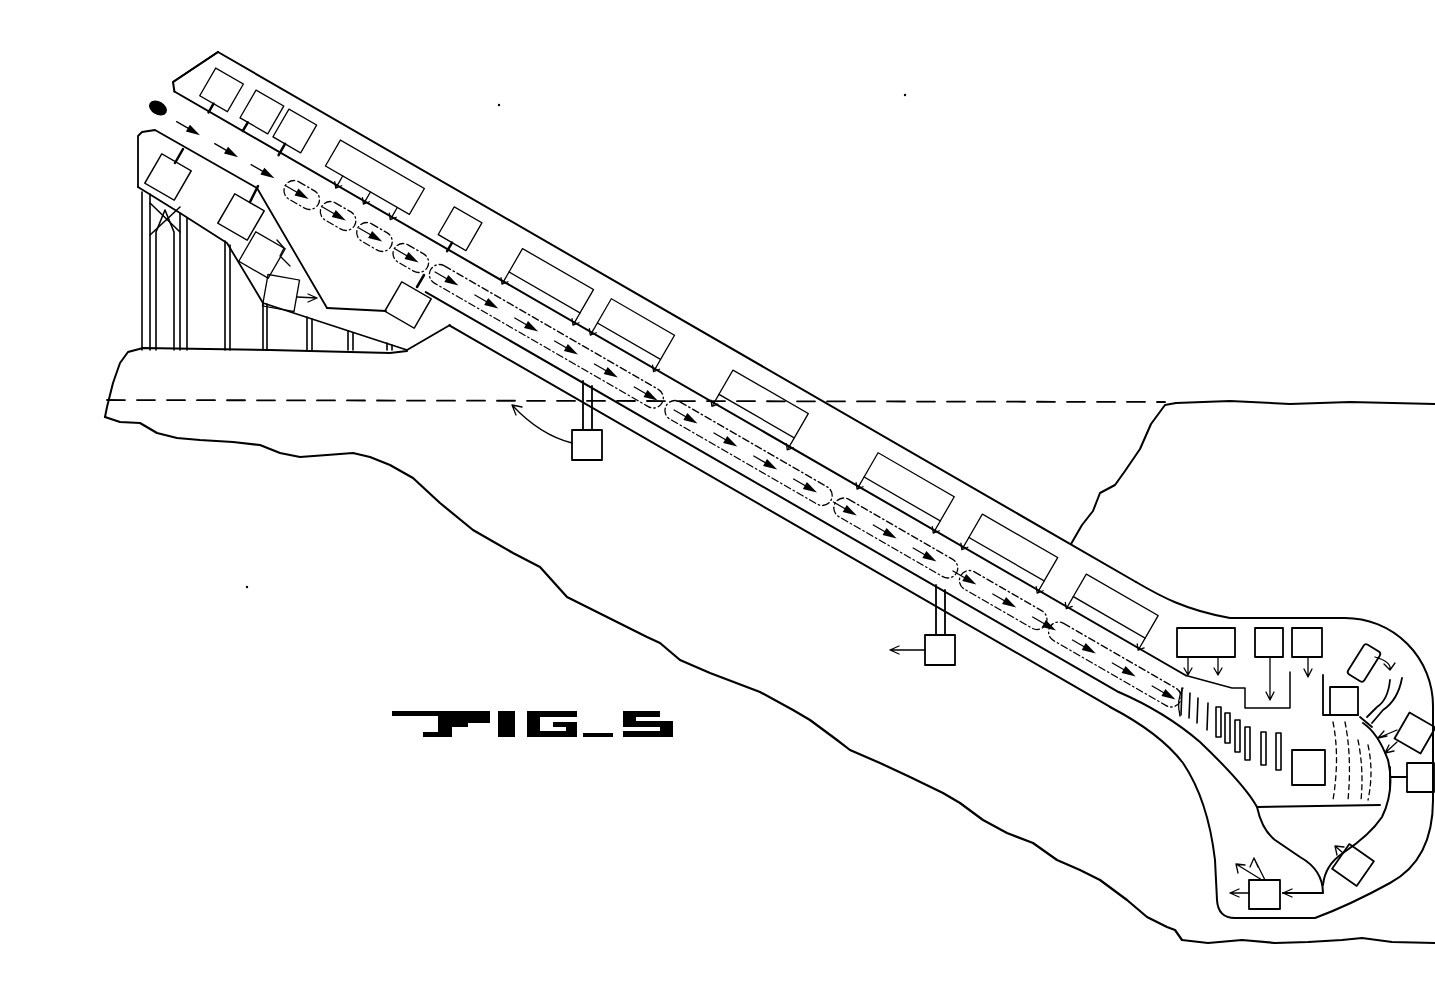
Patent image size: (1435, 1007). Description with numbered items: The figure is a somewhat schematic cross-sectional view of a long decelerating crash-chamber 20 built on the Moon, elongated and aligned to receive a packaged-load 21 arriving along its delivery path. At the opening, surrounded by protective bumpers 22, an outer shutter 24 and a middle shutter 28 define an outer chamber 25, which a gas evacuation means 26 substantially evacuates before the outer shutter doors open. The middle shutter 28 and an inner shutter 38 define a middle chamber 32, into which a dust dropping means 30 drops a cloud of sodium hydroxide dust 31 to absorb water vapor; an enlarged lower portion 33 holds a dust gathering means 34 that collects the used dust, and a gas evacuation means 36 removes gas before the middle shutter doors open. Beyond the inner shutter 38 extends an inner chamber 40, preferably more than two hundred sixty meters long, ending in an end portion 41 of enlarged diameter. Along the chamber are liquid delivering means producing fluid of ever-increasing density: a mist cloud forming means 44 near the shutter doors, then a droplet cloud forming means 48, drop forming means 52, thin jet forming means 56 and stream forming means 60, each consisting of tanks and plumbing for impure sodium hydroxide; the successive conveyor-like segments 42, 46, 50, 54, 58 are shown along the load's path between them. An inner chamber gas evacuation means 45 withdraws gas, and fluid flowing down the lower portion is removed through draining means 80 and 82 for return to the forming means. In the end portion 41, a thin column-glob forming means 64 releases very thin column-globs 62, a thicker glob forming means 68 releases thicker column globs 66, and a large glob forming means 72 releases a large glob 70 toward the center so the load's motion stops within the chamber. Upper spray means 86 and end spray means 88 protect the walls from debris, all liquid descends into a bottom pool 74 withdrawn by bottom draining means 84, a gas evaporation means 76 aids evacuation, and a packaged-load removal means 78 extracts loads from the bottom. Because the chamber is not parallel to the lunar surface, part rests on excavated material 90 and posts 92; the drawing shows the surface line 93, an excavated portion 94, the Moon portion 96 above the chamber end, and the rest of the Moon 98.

The crash-chamber 20 is at (788, 348).
The packaged-load 21 is at (149, 106).
The protective bumpers 22 is at (172, 82).
The outer shutter 24 is at (219, 94).
The outer chamber 25 is at (221, 157).
The gas evacuation means 26 is at (259, 116).
The middle shutter 28 is at (291, 136).
The dust dropping means 30 is at (371, 183).
The sodium hydroxide dust 31 is at (356, 226).
The middle chamber 32 is at (343, 266).
The enlarged lower portion 33 is at (347, 309).
The dust gathering means 34 is at (289, 292).
The gas evacuation means 36 is at (264, 255).
The inner shutter 38 is at (457, 233).
The inner chamber 40 is at (800, 483).
The end portion 41 is at (1277, 797).
The conveyor segment 42 is at (546, 337).
The mist cloud forming means 44 is at (548, 287).
The inner chamber gas evacuation means 45 is at (632, 335).
The conveyor segment 46 is at (748, 453).
The droplet cloud forming means 48 is at (759, 410).
The conveyor segment 50 is at (894, 537).
The drop forming means 52 is at (906, 493).
The conveyor segment 54 is at (998, 598).
The thin jet forming means 56 is at (1009, 553).
The conveyor segment 58 is at (1106, 659).
The stream forming means 60 is at (1112, 612).
The thin column-globs 62 is at (1189, 691).
The thin column-glob forming means 64 is at (1206, 651).
The thicker column globs 66 is at (1282, 732).
The thicker glob forming means 68 is at (1269, 664).
The large glob 70 is at (1308, 767).
The large glob forming means 72 is at (1307, 652).
The bottom pool 74 is at (1334, 840).
The gas evaporation means 76 is at (1412, 777).
The packaged-load removal means 78 is at (1353, 865).
The draining means 80 is at (557, 420).
The draining means 82 is at (922, 625).
The bottom draining means 84 is at (1255, 883).
The upper spray means 86 is at (1362, 685).
The end spray means 88 is at (1406, 733).
The excavated material 90 is at (346, 387).
The posts 92 is at (175, 293).
The surface line 93 is at (916, 392).
The excavated portion 94 is at (1042, 461).
The Moon portion above chamber end 96 is at (1304, 525).
The rest of the Moon 98 is at (526, 502).